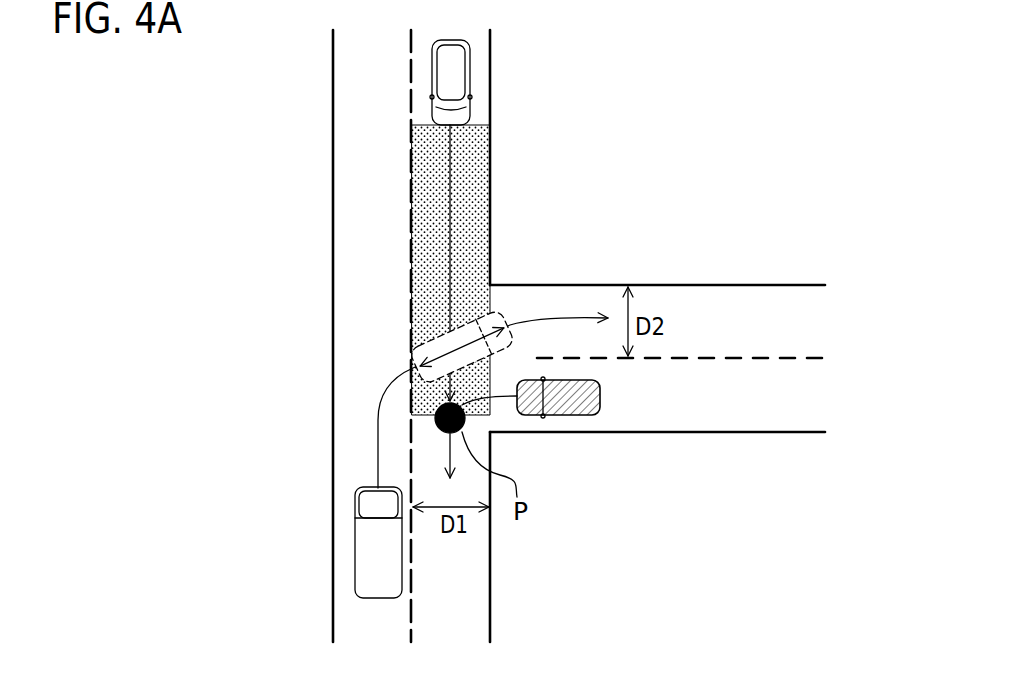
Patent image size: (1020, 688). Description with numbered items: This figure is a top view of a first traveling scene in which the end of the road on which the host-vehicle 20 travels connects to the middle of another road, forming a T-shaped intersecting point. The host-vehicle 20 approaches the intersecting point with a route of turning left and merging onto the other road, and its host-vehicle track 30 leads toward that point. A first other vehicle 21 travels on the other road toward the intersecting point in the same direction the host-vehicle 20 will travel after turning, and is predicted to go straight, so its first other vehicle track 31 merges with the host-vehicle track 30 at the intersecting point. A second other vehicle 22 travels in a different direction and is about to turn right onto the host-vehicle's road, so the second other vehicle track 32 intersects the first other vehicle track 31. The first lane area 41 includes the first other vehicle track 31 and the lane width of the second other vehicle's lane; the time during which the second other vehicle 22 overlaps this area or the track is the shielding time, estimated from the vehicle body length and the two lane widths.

The host-vehicle 20 is at (572, 415).
The first other vehicle 21 is at (470, 72).
The second other vehicle 22 is at (412, 356).
The host-vehicle track 30 is at (490, 397).
The first other vehicle track 31 is at (450, 182).
The second other vehicle track 32 is at (377, 422).
The first lane area 41 is at (470, 241).